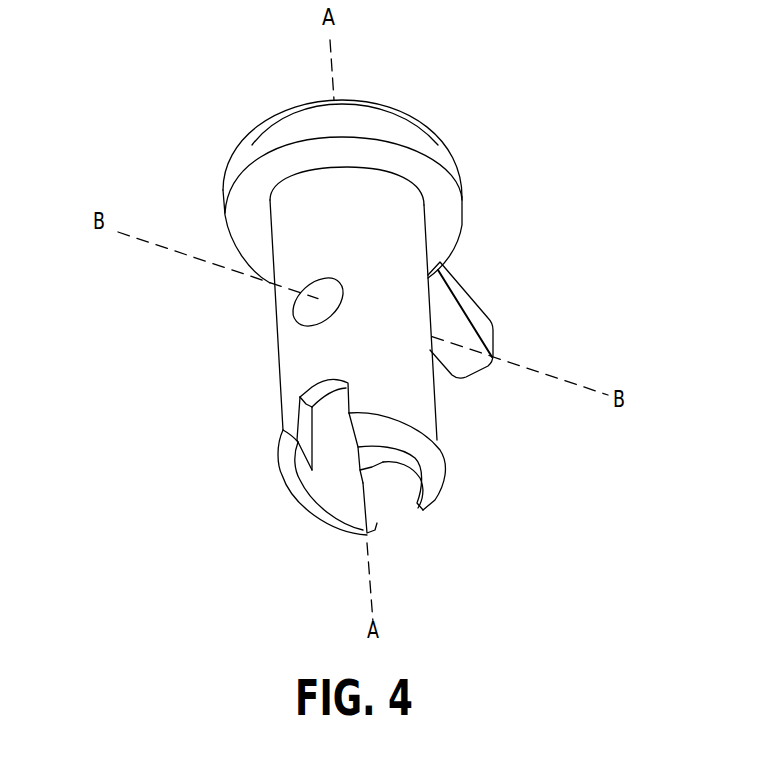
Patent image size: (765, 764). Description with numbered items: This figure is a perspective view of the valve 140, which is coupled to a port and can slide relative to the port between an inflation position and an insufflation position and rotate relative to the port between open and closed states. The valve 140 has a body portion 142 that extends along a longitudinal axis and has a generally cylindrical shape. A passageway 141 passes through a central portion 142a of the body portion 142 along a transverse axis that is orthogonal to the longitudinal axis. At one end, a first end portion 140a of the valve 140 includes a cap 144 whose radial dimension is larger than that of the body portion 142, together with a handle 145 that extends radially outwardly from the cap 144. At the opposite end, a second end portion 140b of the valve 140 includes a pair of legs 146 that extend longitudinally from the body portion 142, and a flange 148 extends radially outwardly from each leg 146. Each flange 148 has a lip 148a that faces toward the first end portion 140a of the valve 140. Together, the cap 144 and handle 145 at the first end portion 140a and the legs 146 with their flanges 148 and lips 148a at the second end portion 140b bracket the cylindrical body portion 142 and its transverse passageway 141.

The valve 140 is at (160, 305).
The first end portion 140a is at (183, 148).
The second end portion 140b is at (223, 455).
The passageway 141 is at (307, 309).
The body portion 142 is at (287, 383).
The central portion 142a is at (238, 350).
The cap 144 is at (272, 145).
The handle 145 is at (470, 315).
The leg 146 is at (285, 425).
The flange 148 is at (290, 493).
The lip 148a is at (278, 472).